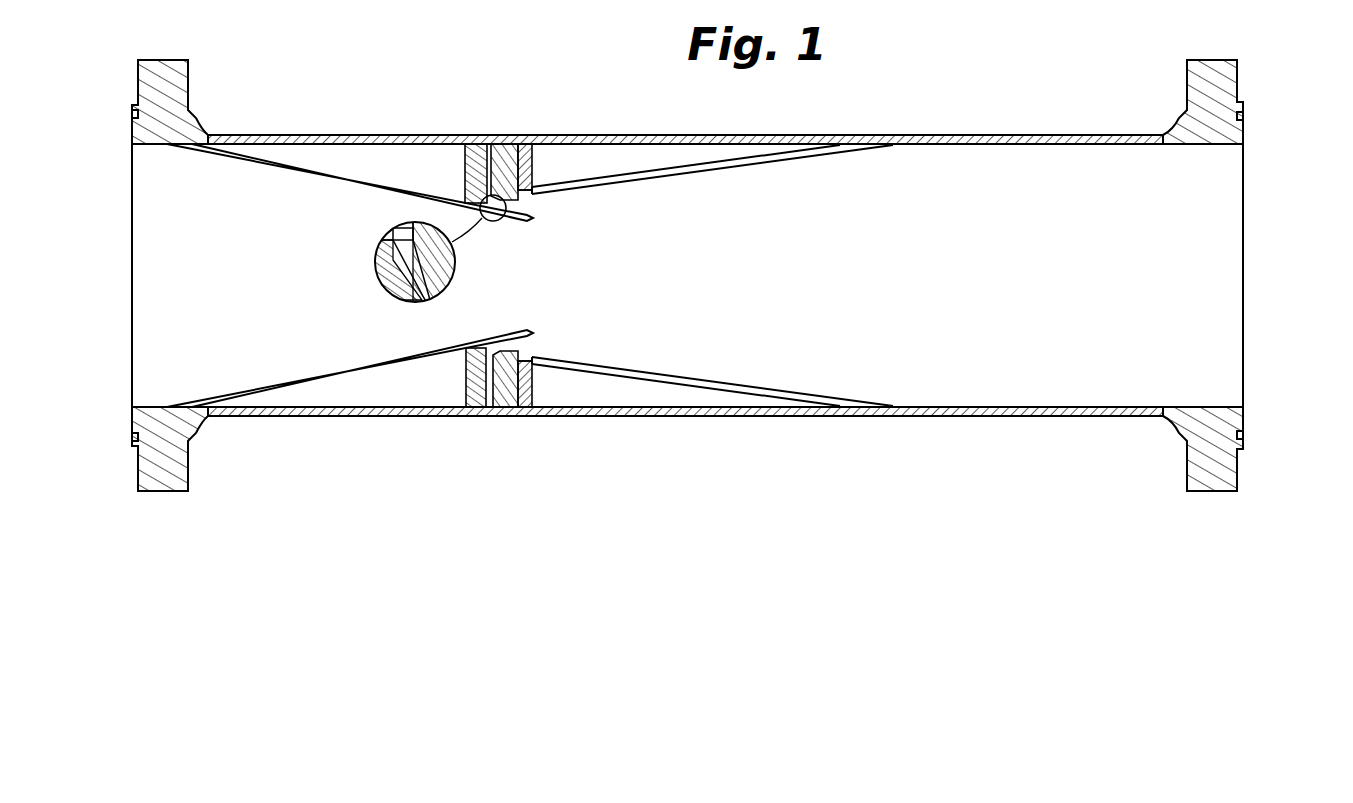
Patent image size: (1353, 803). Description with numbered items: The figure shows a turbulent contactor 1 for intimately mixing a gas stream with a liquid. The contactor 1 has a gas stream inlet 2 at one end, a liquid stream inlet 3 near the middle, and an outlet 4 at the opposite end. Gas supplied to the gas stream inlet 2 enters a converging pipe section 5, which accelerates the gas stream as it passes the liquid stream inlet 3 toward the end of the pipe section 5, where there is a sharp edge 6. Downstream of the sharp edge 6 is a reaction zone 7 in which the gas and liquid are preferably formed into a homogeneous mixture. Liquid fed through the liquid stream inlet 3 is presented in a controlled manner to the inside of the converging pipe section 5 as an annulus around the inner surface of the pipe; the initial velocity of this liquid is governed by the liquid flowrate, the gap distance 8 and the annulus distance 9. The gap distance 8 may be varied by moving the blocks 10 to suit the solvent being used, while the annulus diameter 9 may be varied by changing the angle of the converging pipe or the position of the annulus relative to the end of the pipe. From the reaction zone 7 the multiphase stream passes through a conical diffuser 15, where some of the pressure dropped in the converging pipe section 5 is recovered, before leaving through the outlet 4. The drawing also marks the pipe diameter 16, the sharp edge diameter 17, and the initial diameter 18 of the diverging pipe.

The contactor 1 is at (688, 135).
The gas stream inlet 2 is at (128, 245).
The liquid stream inlet 3 is at (489, 200).
The outlet 4 is at (1243, 355).
The converging pipe section 5 is at (348, 378).
The sharp edge 6 is at (545, 340).
The reaction zone 7 is at (560, 248).
The gap distance 8 is at (432, 333).
The annulus distance 9 is at (533, 208).
The blocks 10 is at (500, 395).
The conical diffuser 15 is at (725, 395).
The pipe diameter 16 is at (1243, 416).
The sharp edge diameter 17 is at (535, 222).
The initial diameter of the diverging pipe 18 is at (533, 195).